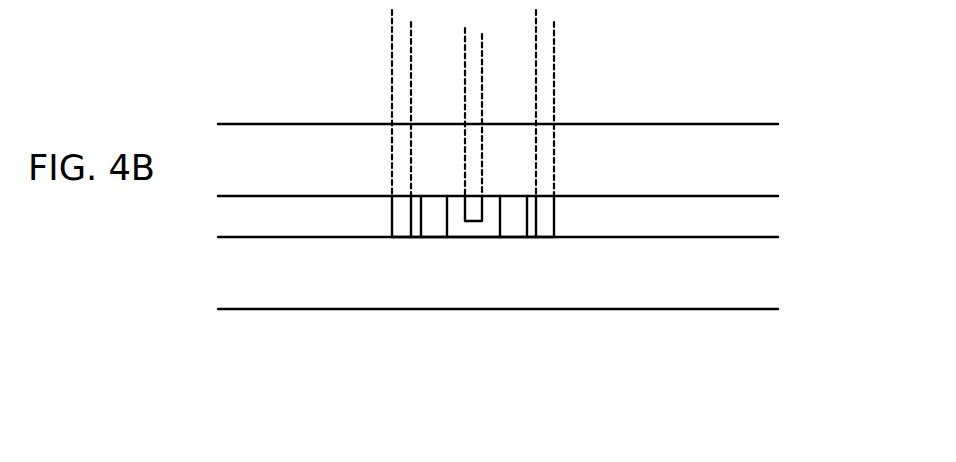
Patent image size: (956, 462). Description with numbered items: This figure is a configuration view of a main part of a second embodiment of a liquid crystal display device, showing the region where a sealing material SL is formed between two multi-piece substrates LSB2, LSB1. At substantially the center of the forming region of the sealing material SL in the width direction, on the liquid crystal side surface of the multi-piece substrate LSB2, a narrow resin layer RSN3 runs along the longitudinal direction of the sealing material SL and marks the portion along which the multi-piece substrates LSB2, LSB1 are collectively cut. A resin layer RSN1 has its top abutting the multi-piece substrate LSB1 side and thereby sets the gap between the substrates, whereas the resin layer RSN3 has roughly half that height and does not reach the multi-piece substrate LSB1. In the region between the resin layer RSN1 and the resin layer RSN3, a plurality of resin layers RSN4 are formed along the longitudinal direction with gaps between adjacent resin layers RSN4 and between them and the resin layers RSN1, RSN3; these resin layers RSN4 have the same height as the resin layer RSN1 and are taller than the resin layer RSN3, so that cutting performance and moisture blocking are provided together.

The multi-piece substrate LSB2 is at (287, 150).
The multi-piece substrate LSB1 is at (270, 277).
The resin layer RSN1 is at (400, 217).
The resin layer RSN3 is at (476, 211).
The resin layers RSN4 is at (434, 228).
The sealing material SL is at (476, 237).